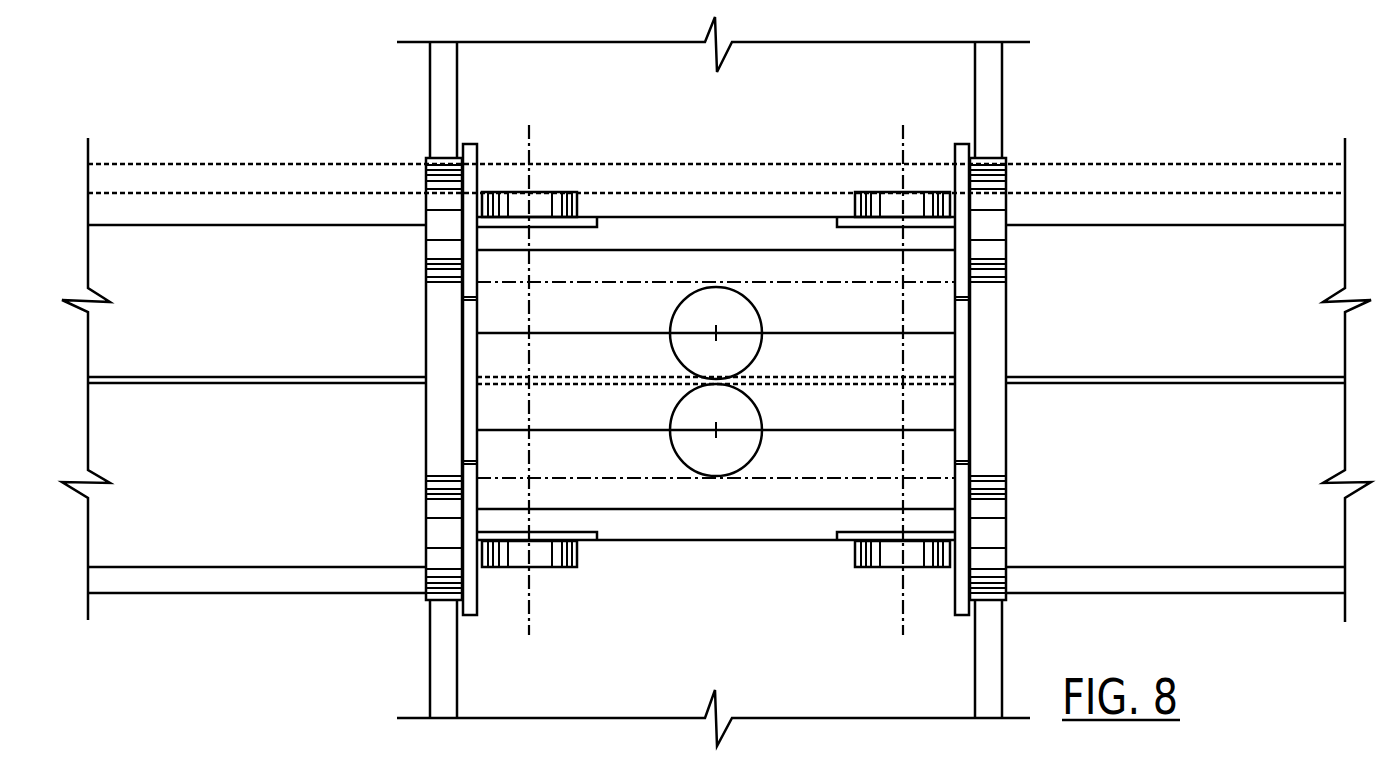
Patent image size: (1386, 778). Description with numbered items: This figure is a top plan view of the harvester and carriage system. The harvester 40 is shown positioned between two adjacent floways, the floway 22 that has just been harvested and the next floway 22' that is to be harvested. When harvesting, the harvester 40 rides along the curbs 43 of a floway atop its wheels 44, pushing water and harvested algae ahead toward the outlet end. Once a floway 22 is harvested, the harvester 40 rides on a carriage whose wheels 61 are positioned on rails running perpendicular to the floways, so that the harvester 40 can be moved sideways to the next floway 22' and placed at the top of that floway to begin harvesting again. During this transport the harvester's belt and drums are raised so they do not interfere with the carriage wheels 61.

The floway 22 is at (1188, 501).
The next floway 22' is at (1188, 259).
The harvester 40 is at (930, 313).
The curbs 43 is at (445, 90).
The wheels 44 is at (540, 202).
The carriage wheels 61 is at (995, 535).